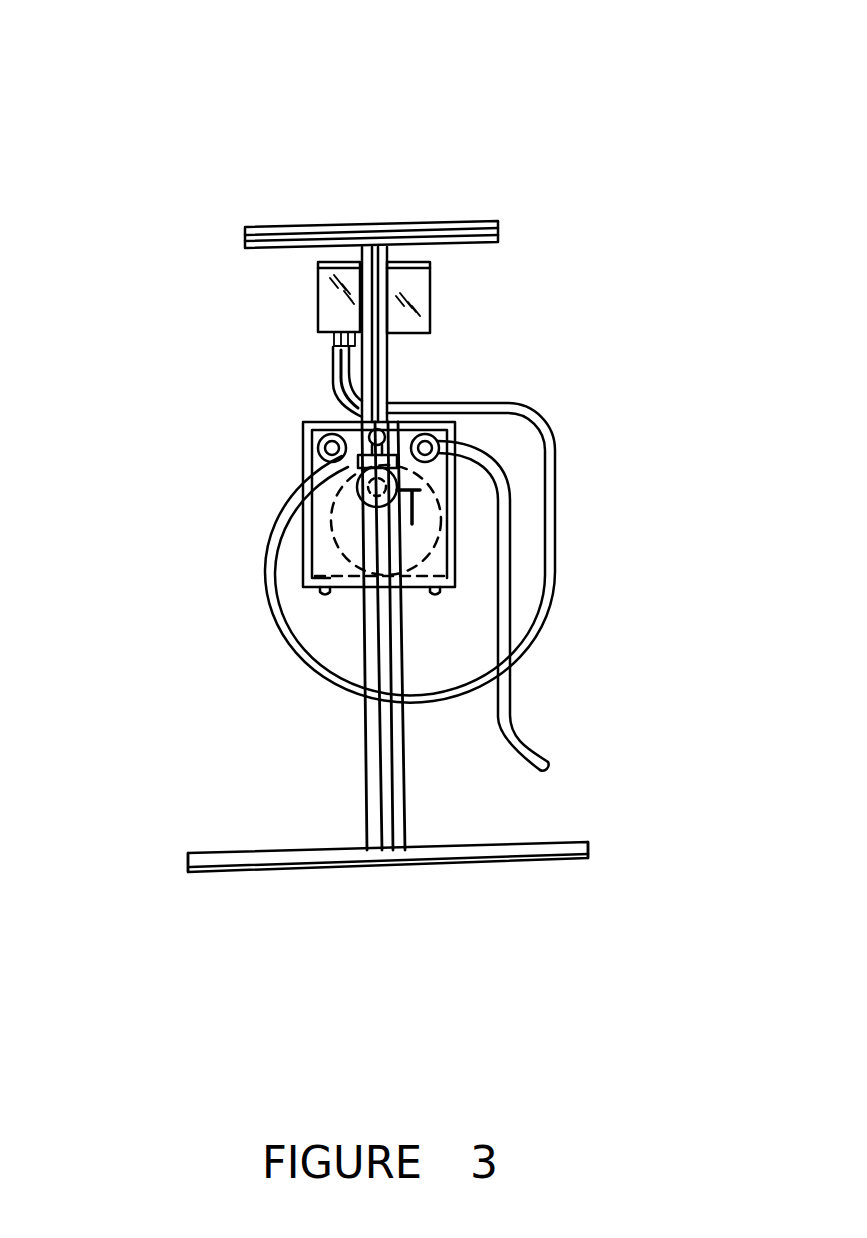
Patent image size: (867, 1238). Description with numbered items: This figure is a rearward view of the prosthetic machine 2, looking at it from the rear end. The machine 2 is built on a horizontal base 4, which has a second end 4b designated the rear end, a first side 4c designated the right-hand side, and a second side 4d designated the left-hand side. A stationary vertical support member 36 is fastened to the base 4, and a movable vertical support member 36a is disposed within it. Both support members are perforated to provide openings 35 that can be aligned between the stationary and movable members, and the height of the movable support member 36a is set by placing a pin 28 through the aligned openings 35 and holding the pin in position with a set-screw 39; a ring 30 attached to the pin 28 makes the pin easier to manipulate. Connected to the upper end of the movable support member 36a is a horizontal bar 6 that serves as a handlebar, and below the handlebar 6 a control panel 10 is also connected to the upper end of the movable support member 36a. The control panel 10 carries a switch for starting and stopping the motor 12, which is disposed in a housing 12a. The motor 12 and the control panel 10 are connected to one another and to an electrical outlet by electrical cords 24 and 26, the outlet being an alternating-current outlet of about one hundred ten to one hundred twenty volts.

The prosthetic machine 2 is at (596, 96).
The horizontal base 4 is at (523, 818).
The second end 4b is at (438, 853).
The first side 4c is at (186, 868).
The second side 4d is at (590, 848).
The horizontal bar 6 is at (270, 227).
The control panel 10 is at (430, 300).
The motor 12 is at (335, 505).
The housing 12a is at (322, 422).
The electrical cord 24 is at (556, 528).
The electrical cord 26 is at (528, 745).
The pin 28 is at (448, 455).
The ring 30 is at (414, 512).
The opening 35 is at (384, 436).
The stationary vertical support member 36 is at (363, 752).
The movable vertical support member 36a is at (390, 365).
The set-screw 39 is at (372, 505).